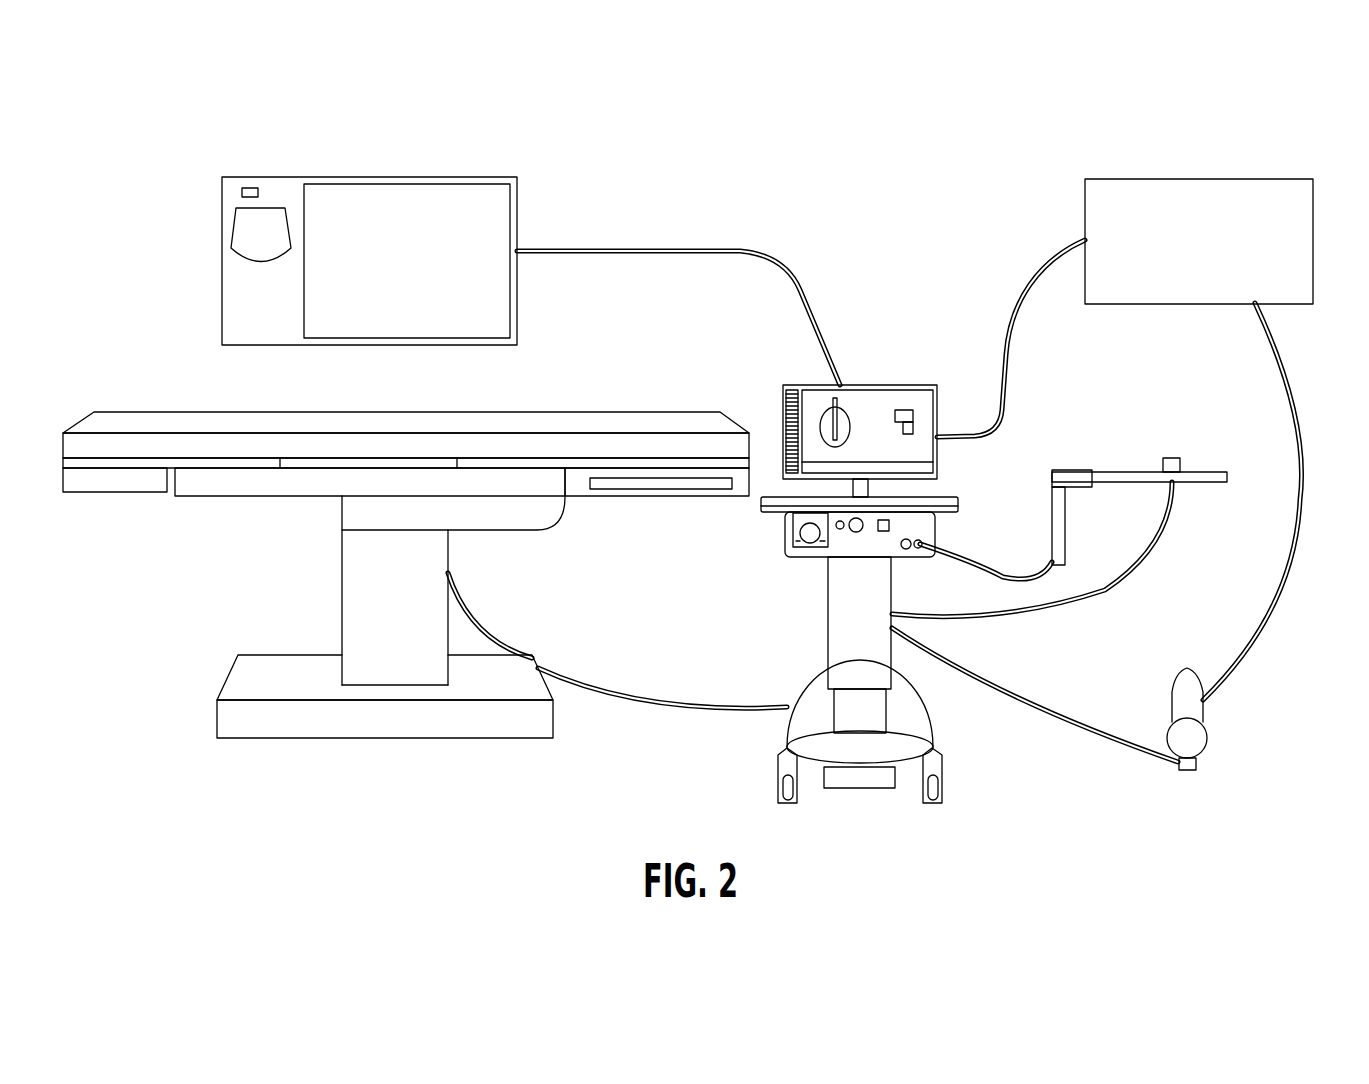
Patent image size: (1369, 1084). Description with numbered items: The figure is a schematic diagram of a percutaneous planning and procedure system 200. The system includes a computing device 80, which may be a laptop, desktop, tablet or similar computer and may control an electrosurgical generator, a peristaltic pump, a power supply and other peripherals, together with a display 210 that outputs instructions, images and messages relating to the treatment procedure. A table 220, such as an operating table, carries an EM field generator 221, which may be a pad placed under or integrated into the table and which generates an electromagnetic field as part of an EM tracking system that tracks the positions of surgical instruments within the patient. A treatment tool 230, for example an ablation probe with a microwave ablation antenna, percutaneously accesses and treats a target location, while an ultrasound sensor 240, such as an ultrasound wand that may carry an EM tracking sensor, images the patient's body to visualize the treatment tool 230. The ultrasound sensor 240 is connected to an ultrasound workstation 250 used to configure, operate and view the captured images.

The percutaneous planning and procedure system 200 is at (279, 134).
The display 210 is at (518, 200).
The table 220 is at (140, 412).
The EM field generator 221 is at (297, 470).
The computing device 80 is at (828, 603).
The treatment tool 230 is at (1075, 468).
The ultrasound sensor 240 is at (1190, 667).
The ultrasound workstation 250 is at (1264, 179).